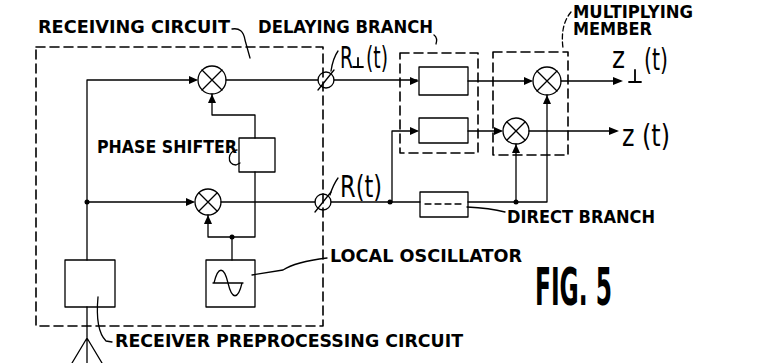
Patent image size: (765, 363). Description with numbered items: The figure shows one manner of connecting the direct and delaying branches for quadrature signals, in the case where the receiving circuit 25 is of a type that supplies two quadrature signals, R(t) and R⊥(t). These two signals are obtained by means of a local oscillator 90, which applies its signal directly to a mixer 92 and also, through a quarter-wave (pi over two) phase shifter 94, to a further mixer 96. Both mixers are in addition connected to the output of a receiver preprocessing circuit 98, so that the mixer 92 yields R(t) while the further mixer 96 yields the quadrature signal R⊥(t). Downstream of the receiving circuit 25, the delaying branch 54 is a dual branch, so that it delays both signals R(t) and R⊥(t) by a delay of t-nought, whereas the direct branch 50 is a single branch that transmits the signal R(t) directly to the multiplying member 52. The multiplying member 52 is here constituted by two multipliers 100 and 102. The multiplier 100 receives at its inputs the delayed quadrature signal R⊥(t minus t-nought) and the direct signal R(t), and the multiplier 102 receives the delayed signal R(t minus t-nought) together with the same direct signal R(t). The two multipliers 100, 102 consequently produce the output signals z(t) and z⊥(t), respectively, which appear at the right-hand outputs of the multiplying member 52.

The receiving circuit 25 is at (298, 288).
The direct branch 50 is at (456, 218).
The multiplying member 52 is at (517, 52).
The delaying branch 54 is at (430, 66).
The local oscillator 90 is at (206, 283).
The mixer 92 is at (205, 188).
The π/2 phase shifter 94 is at (276, 150).
The further mixer 96 is at (203, 95).
The receiver preprocessing circuit 98 is at (103, 259).
The multiplier 100 is at (557, 69).
The multiplier 102 is at (505, 141).